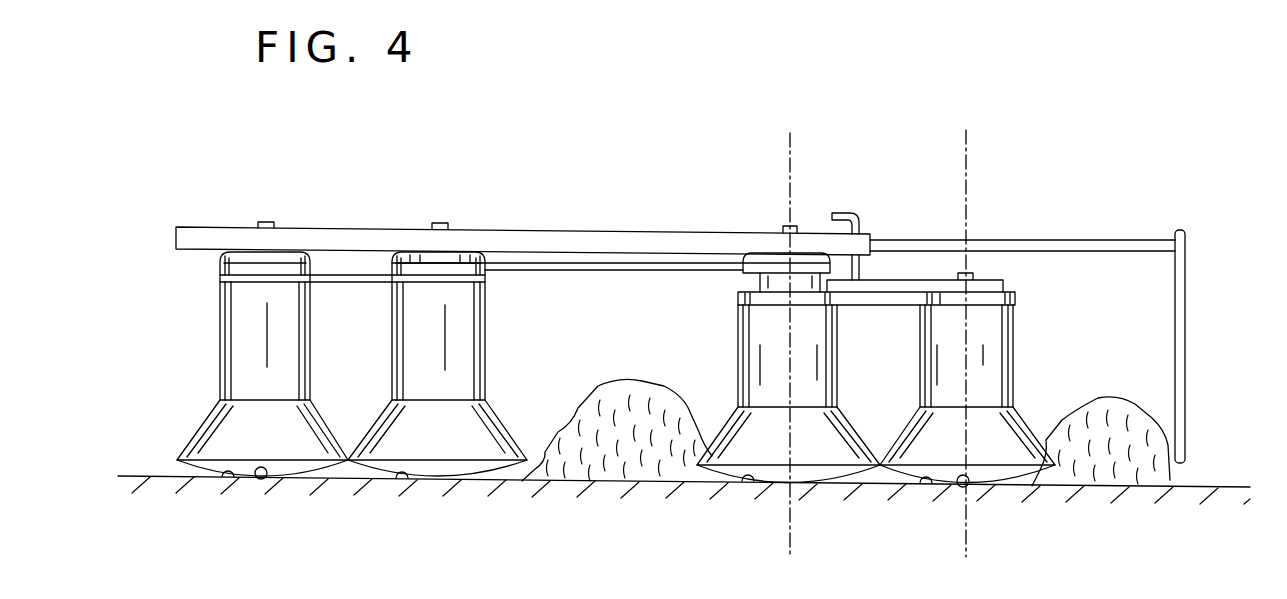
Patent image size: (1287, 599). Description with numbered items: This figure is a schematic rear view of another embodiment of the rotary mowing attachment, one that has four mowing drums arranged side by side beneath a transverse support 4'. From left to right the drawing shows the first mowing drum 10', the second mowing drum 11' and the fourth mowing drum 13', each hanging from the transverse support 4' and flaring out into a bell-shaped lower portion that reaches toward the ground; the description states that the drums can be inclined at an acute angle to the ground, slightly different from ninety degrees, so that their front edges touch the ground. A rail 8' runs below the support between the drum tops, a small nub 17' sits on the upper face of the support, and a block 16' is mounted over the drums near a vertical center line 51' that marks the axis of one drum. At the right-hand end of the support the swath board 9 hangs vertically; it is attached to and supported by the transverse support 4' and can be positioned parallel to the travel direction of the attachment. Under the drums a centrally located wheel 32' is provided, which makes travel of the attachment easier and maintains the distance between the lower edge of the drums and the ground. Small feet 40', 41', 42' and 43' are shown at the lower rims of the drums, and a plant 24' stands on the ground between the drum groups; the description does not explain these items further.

The transverse support 4' is at (675, 218).
The connecting rail 8' is at (567, 286).
The pivot nub 17' is at (751, 208).
The mounting block 16' is at (915, 234).
The vertical axis 51' is at (1004, 343).
The swath board 9 is at (1172, 325).
The first mowing drum 10' is at (638, 477).
The second mowing drum 11' is at (437, 475).
The fourth mowing drum 13' is at (788, 481).
The plant 24' is at (617, 464).
The wheel 32' is at (641, 511).
The foot 40' is at (213, 509).
The foot 41' is at (414, 511).
The foot 42' is at (909, 516).
The foot 43' is at (738, 515).